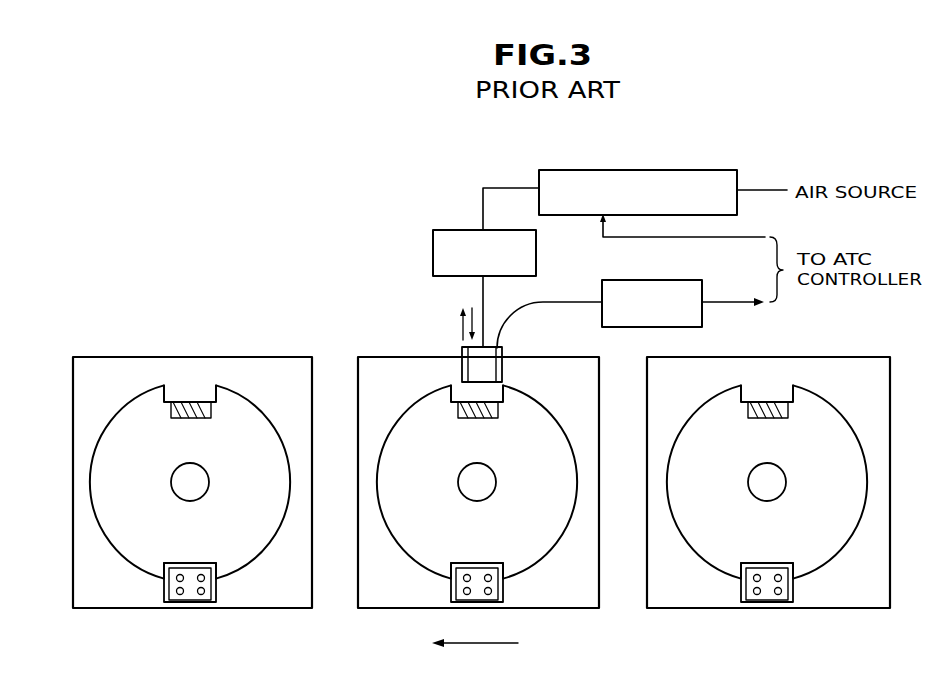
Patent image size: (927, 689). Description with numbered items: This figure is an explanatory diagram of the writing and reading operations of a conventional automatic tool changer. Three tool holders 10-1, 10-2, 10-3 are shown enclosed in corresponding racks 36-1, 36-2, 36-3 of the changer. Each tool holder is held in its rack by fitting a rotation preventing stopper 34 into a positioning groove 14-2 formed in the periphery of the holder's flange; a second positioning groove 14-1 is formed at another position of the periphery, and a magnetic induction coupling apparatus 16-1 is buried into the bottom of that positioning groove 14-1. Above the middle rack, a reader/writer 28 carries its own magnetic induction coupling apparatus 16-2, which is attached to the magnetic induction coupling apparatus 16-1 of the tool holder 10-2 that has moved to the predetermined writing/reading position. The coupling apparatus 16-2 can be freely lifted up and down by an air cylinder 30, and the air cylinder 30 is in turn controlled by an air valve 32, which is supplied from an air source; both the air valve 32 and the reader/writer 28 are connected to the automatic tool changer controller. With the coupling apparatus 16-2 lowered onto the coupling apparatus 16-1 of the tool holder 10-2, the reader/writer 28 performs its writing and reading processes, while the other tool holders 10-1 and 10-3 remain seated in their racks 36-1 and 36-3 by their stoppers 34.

The tool holder 10-1 is at (140, 410).
The tool holder 10-2 is at (422, 417).
The tool holder 10-3 is at (728, 398).
The positioning groove 14-1 is at (218, 388).
The positioning groove 14-2 is at (213, 578).
The magnetic induction coupling apparatus 16-1 is at (203, 418).
The magnetic induction coupling apparatus 16-2 is at (517, 354).
The reader/writer 28 is at (663, 280).
The air cylinder 30 is at (453, 228).
The air valve 32 is at (625, 168).
The rotation preventing stopper 34 is at (192, 602).
The rack 36-1 is at (123, 608).
The rack 36-2 is at (403, 608).
The rack 36-3 is at (695, 608).